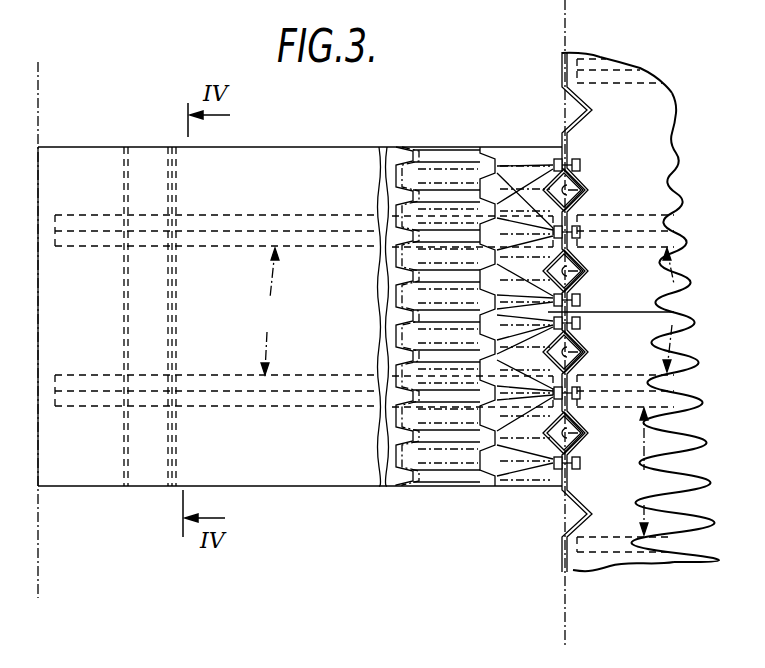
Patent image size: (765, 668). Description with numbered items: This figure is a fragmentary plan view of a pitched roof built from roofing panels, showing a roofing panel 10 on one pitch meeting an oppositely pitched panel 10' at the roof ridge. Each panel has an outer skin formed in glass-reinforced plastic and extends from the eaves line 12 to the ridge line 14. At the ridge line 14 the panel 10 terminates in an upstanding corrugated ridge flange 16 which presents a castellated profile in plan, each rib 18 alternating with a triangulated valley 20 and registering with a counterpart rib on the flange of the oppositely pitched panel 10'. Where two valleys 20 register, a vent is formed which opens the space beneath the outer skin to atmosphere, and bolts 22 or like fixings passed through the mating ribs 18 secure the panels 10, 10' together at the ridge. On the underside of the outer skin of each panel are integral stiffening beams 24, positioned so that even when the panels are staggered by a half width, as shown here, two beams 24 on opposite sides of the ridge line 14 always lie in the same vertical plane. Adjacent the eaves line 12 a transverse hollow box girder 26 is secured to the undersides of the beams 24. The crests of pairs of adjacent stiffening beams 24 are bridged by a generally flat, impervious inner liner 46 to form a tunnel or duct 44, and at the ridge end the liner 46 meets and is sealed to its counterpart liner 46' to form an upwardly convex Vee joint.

The roofing panel 10 is at (300, 299).
The oppositely pitched panel 10' is at (609, 323).
The eaves line 12 is at (38, 95).
The ridge line 14 is at (565, 40).
The corrugated ridge flange 16 is at (556, 146).
The rib 18 is at (396, 300).
The triangulated valley 20 is at (480, 328).
The bolts 22 is at (522, 166).
The stiffening beams 24 is at (622, 87).
The transverse hollow box girder 26 is at (165, 168).
The tunnel or duct 44 is at (476, 391).
The inner liner 46 is at (390, 231).
The counterpart liner 46' is at (566, 323).